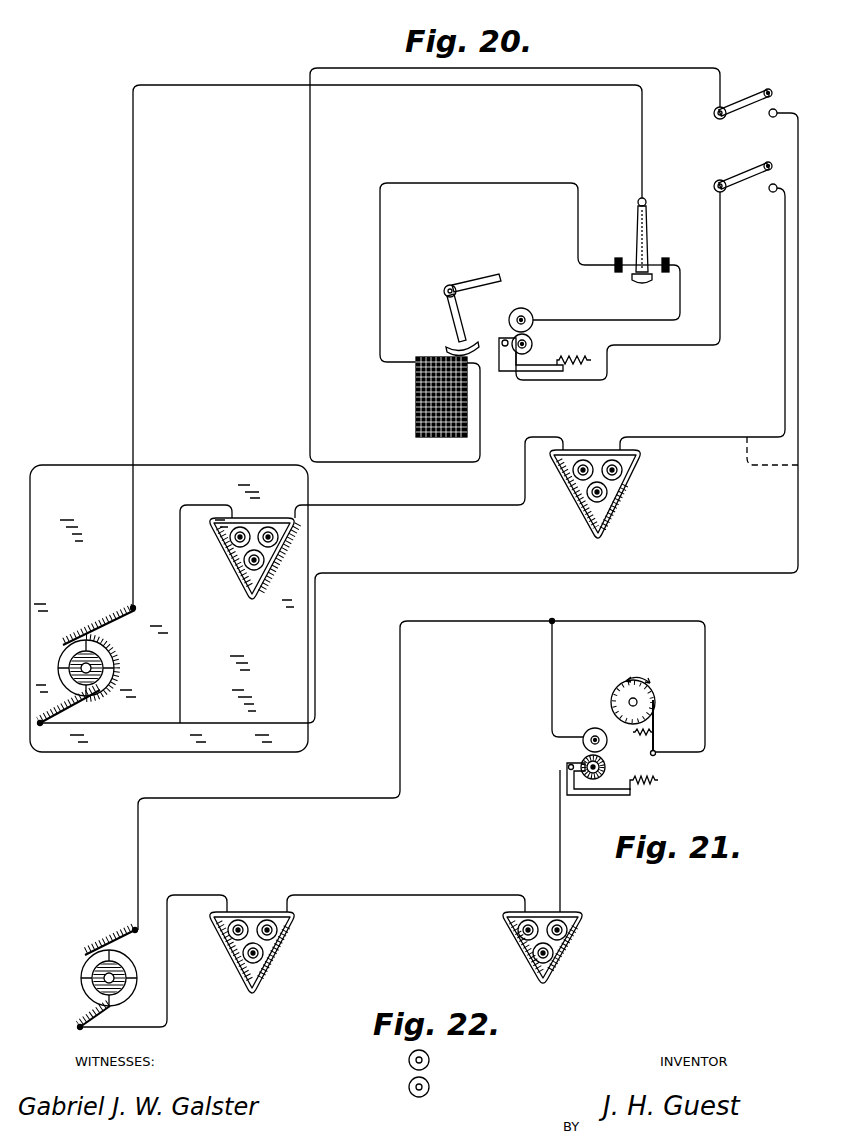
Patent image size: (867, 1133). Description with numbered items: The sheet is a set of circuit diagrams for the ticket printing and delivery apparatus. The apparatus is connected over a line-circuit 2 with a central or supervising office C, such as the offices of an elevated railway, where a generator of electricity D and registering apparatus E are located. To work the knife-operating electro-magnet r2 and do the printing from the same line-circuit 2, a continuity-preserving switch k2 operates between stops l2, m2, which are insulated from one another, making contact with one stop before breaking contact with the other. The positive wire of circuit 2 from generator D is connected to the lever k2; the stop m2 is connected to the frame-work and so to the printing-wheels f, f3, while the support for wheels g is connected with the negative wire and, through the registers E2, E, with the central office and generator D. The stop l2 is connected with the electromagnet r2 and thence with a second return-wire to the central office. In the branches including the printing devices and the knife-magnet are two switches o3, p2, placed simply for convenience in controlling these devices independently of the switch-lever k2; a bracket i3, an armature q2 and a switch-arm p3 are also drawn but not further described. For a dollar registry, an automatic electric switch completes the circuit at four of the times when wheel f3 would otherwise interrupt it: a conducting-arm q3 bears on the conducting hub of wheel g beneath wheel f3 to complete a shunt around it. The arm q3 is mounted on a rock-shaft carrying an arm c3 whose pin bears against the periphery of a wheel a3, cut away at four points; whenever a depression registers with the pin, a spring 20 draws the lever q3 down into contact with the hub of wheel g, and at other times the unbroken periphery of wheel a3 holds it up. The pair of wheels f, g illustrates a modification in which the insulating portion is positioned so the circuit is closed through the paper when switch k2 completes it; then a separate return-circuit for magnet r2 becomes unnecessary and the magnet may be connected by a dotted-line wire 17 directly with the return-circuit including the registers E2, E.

In FIG. 20, the line-circuit 2 is at (387, 348).
In FIG. 20, the wire 17 is at (764, 464).
In FIG. 20, the central or supervising office C is at (169, 608).
In FIG. 20, the generator of electricity D is at (116, 666).
In FIG. 21, the generator of electricity D is at (139, 978).
In FIG. 20, the registering apparatus E is at (297, 552).
In FIG. 21, the registering apparatus E is at (297, 942).
In FIG. 20, the register E2 is at (636, 472).
In FIG. 20, the electro-magnet r2 is at (414, 400).
In FIG. 20, the switch p2 is at (458, 310).
In FIG. 20, the armature q2 is at (447, 347).
In FIG. 20, the printing-wheel f is at (526, 313).
In FIG. 22, the printing-wheel f is at (431, 1062).
In FIG. 20, the wheel g is at (531, 351).
In FIG. 21, the wheel g is at (605, 768).
In FIG. 22, the wheel g is at (430, 1089).
In FIG. 20, the roller bracket i3 is at (546, 369).
In FIG. 21, the roller bracket i3 is at (594, 795).
In FIG. 20, the switch k2 is at (648, 223).
In FIG. 20, the stop l2 is at (620, 258).
In FIG. 20, the stop m2 is at (668, 258).
In FIG. 20, the switch o3 is at (738, 118).
In FIG. 20, the switch arm p3 is at (742, 191).
In FIG. 21, the wheel a3 is at (633, 700).
In FIG. 21, the arm c3 is at (656, 724).
In FIG. 21, the printing-wheel f3 is at (591, 735).
In FIG. 21, the conducting-arm q3 is at (652, 757).
In FIG. 21, the spring 20 is at (633, 733).